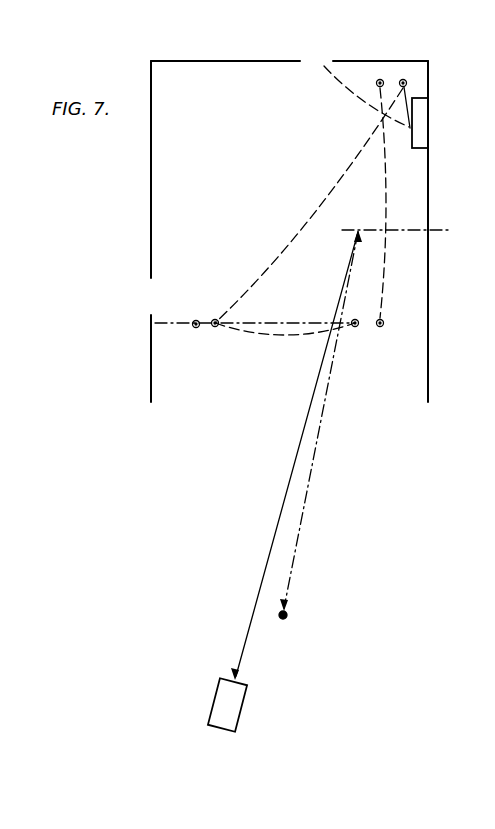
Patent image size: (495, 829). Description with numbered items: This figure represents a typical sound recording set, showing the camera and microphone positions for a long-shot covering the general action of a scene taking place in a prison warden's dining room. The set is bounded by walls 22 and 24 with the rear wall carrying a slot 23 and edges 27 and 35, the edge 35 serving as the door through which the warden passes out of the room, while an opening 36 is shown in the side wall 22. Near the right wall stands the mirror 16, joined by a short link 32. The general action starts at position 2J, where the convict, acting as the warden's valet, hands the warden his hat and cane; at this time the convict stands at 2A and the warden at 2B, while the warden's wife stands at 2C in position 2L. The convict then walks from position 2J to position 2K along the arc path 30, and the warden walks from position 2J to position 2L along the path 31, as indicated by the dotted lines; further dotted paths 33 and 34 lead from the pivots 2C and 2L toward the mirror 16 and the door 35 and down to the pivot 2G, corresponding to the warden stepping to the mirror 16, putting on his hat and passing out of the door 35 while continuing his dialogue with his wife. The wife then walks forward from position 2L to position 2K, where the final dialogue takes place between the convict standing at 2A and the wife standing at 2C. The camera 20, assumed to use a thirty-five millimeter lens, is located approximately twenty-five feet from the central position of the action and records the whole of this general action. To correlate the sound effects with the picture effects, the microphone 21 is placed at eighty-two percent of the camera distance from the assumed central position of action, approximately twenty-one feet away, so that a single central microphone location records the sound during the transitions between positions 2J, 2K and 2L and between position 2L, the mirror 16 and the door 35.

The mirror 16 is at (414, 138).
The camera 20 is at (247, 697).
The microphone 21 is at (292, 615).
The side wall 22 is at (150, 263).
The slot 23 is at (340, 61).
The side wall 24 is at (429, 196).
The edge 27 is at (324, 66).
The arc path 30 is at (273, 337).
The path 31 is at (333, 197).
The link 32 is at (413, 97).
The path 33 is at (345, 96).
The path 34 is at (387, 173).
The door 35 is at (311, 66).
The opening 36 is at (150, 290).
The convict's standing position 2A is at (192, 330).
The warden's standing position 2B is at (406, 80).
The warden's wife's standing position 2C is at (377, 80).
The pivot 2G is at (382, 331).
The starting action position 2J is at (207, 317).
The second action position 2K is at (363, 308).
The third action position 2L is at (393, 72).